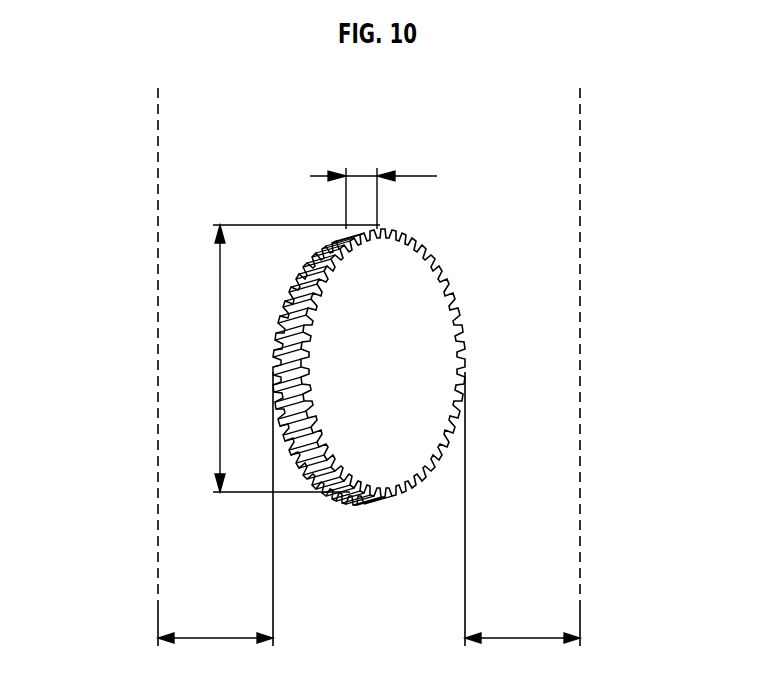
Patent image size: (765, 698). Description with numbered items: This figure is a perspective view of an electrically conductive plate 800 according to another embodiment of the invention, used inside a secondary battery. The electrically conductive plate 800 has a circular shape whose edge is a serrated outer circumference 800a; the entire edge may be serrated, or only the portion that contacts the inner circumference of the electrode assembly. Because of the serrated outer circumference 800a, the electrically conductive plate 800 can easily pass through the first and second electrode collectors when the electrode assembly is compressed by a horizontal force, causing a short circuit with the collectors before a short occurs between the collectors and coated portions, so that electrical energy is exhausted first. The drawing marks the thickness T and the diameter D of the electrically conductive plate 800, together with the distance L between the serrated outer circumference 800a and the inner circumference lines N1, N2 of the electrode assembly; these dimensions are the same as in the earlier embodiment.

The electrically conductive plate 800 is at (369, 408).
The serrated outer circumference 800a is at (350, 488).
The inner circumference line N1 is at (158, 342).
The inner circumference line N2 is at (580, 338).
The diameter D is at (281, 358).
The thickness T is at (373, 187).
The distance L is at (369, 656).